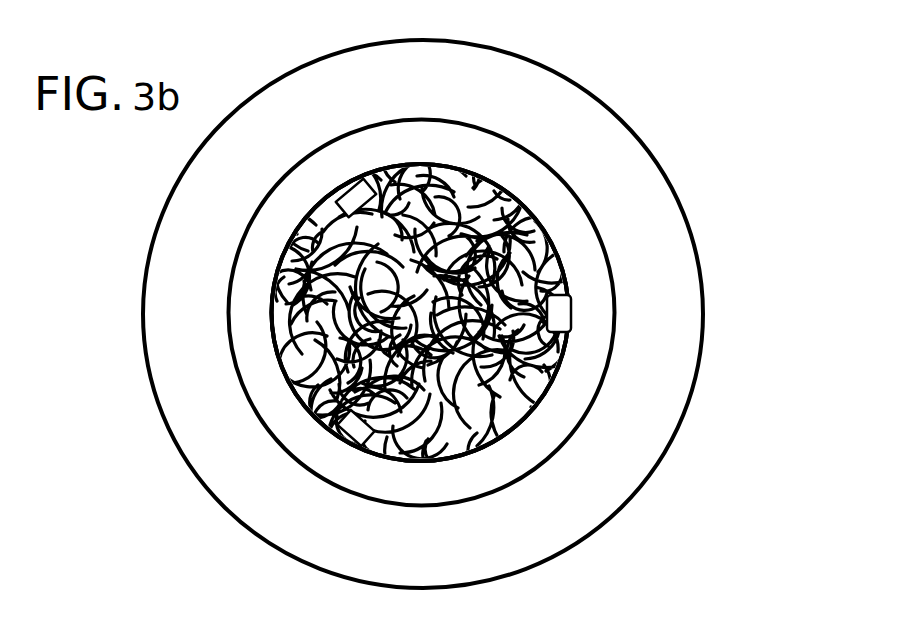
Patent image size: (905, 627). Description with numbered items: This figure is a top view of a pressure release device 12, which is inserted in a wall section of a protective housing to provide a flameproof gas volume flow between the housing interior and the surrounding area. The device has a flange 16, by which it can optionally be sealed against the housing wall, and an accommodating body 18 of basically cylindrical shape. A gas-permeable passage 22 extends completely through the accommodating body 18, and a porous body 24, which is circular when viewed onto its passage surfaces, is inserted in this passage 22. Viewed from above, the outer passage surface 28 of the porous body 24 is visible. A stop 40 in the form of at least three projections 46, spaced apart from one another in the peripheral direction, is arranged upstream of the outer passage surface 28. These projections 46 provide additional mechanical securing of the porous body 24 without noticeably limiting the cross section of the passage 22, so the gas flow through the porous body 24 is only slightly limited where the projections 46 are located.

The pressure release device 12 is at (630, 110).
The flange 16 is at (300, 103).
The accommodating body 18 is at (627, 225).
The gas-permeable passage 22 is at (465, 425).
The porous body 24 is at (565, 369).
The outer passage surface 28 is at (535, 400).
The stop 40 is at (347, 450).
The projections 46 is at (307, 224).